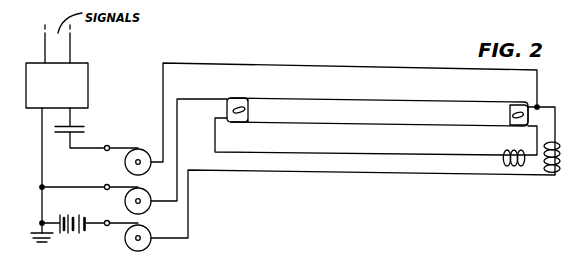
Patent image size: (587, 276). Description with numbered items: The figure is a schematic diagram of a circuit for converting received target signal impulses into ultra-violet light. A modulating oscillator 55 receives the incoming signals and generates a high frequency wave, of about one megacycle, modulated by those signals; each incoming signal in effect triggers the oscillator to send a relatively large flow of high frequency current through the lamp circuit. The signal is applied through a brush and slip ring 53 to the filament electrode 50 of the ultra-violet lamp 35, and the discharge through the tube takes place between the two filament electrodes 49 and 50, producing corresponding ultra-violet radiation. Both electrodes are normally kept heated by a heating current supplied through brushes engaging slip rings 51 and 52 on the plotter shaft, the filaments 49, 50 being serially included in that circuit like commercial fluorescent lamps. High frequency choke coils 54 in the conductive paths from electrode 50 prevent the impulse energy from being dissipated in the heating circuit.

The modulating oscillator 55 is at (84, 80).
The slip ring 53 is at (125, 163).
The slip ring 51 is at (125, 201).
The slip ring 52 is at (125, 238).
The ultra-violet lamp 35 is at (427, 102).
The filament electrode 49 is at (239, 105).
The filament electrode 50 is at (520, 105).
The high frequency choke coils 54 is at (523, 163).